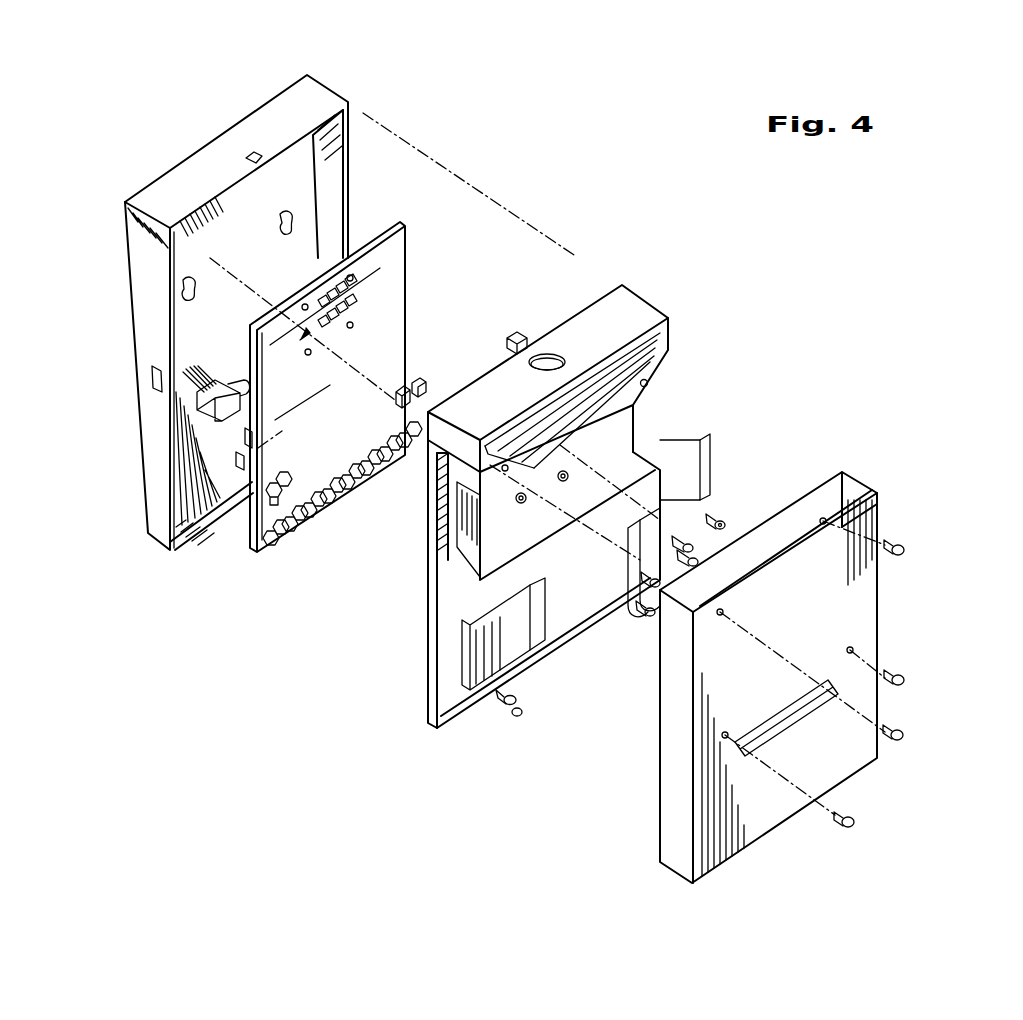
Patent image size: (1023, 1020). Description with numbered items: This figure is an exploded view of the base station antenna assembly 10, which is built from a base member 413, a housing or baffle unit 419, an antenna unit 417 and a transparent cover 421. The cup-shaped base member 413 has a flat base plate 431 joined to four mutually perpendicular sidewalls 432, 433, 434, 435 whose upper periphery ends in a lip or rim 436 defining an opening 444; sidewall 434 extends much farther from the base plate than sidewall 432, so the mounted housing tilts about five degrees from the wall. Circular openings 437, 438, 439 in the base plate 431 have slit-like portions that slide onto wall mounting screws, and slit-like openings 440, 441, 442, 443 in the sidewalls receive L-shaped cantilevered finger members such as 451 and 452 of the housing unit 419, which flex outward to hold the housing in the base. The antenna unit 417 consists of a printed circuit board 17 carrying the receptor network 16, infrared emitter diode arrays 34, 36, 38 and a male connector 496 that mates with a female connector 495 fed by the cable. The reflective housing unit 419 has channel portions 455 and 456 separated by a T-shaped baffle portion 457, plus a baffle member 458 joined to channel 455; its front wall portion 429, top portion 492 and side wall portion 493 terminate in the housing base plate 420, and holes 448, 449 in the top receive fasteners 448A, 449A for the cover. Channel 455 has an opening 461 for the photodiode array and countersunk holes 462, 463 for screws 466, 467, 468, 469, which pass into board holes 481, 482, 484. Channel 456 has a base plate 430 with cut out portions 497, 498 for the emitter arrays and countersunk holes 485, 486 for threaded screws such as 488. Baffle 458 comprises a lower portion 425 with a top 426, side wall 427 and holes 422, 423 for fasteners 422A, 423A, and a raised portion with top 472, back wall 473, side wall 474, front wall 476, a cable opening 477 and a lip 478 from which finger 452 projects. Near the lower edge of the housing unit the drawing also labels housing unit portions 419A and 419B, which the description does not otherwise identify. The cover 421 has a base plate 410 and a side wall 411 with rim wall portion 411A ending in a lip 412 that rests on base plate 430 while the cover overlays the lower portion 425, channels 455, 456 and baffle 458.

The base station antenna assembly 10 is at (892, 302).
The receptor network 16 is at (303, 340).
The printed circuit board 17 is at (407, 257).
The infrared emitter diode array 34 is at (380, 512).
The infrared emitter diode array 36 is at (360, 487).
The infrared emitter diode array 38 is at (418, 380).
The base plate 410 is at (780, 812).
The side wall 411 is at (672, 832).
The rim wall portion 411A is at (880, 488).
The lip 412 is at (838, 472).
The base member 413 is at (138, 508).
The antenna unit 417 is at (247, 565).
The housing or baffle unit 419 is at (437, 745).
The bracket lower rail 419A is at (463, 722).
The bracket lower corner 419B is at (432, 740).
The base plate 420 is at (440, 605).
The transparent cover 421 is at (672, 876).
The hole 422 is at (505, 472).
The fastener 422A is at (903, 735).
The hole 423 is at (652, 380).
The fastener 423A is at (905, 549).
The lower portion 425 is at (479, 695).
The top 426 is at (700, 372).
The side wall 427 is at (435, 560).
The front wall portion 429 is at (642, 462).
The base plate 430 is at (432, 722).
The base plate 431 is at (210, 552).
The sidewall 432 is at (195, 550).
The sidewall 433 is at (145, 293).
The sidewall 434 is at (275, 123).
The sidewall 435 is at (335, 178).
The lip or rim 436 is at (352, 110).
The circular opening 437 is at (185, 283).
The circular opening 438 is at (279, 222).
The circular opening 439 is at (243, 438).
The slit-like opening 440 is at (240, 548).
The slit-like opening 441 is at (152, 378).
The slit-like opening 442 is at (245, 158).
The slit-like opening 443 is at (350, 235).
The opening 444 is at (230, 292).
The hole 448 is at (548, 635).
The fastener 448A is at (855, 822).
The hole 449 is at (642, 535).
The fastener 449A is at (904, 676).
The L-shaped cantilevered finger member 451 is at (440, 610).
The L-shaped cantilevered finger member 452 is at (522, 332).
The channel portion 455 is at (705, 395).
The channel portion 456 is at (540, 690).
The baffle portion 457 is at (718, 445).
The baffle member 458 is at (662, 292).
The opening 461 is at (523, 503).
The countersunk hole 462 is at (565, 481).
The countersunk hole 463 is at (648, 404).
The screw 466 is at (722, 518).
The screw 467 is at (692, 545).
The screw 468 is at (662, 582).
The screw 469 is at (720, 586).
The top portion 472 is at (670, 345).
The back wall portion 473 is at (670, 318).
The side wall portion 474 is at (440, 430).
The front wall portion 476 is at (673, 357).
The opening 477 is at (566, 355).
The lip 478 is at (608, 290).
The hole 481 is at (305, 305).
The hole 482 is at (308, 356).
The hole 484 is at (353, 278).
The countersunk hole 485 is at (507, 706).
The countersunk hole 486 is at (645, 685).
The threaded screw 488 is at (353, 325).
The top portion 492 is at (612, 650).
The side wall portion 493 is at (455, 650).
The female connector 495 is at (198, 405).
The male connector 496 is at (236, 462).
The slot-like cut out portion 497 is at (462, 680).
The slot-like cut out portion 498 is at (702, 490).